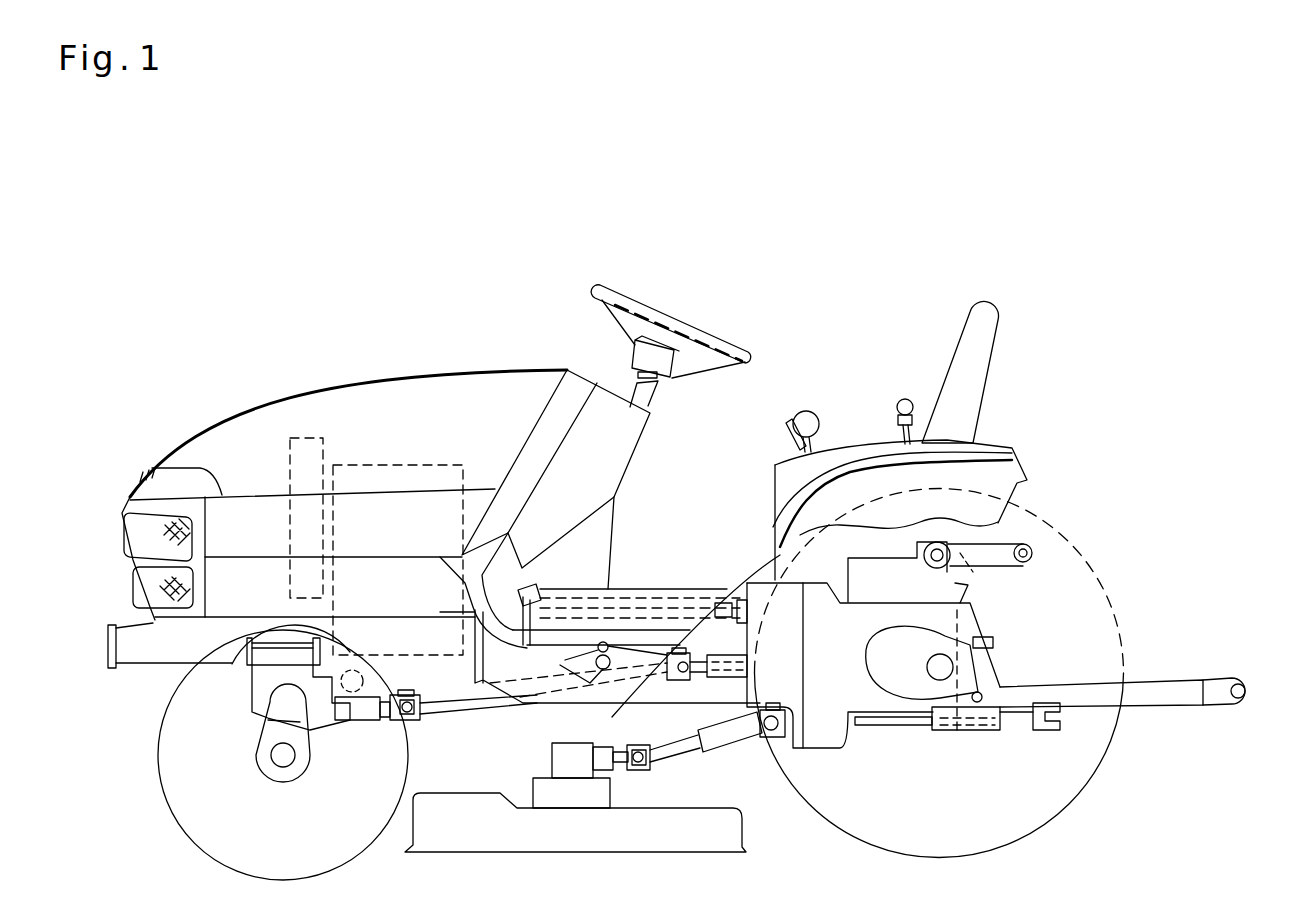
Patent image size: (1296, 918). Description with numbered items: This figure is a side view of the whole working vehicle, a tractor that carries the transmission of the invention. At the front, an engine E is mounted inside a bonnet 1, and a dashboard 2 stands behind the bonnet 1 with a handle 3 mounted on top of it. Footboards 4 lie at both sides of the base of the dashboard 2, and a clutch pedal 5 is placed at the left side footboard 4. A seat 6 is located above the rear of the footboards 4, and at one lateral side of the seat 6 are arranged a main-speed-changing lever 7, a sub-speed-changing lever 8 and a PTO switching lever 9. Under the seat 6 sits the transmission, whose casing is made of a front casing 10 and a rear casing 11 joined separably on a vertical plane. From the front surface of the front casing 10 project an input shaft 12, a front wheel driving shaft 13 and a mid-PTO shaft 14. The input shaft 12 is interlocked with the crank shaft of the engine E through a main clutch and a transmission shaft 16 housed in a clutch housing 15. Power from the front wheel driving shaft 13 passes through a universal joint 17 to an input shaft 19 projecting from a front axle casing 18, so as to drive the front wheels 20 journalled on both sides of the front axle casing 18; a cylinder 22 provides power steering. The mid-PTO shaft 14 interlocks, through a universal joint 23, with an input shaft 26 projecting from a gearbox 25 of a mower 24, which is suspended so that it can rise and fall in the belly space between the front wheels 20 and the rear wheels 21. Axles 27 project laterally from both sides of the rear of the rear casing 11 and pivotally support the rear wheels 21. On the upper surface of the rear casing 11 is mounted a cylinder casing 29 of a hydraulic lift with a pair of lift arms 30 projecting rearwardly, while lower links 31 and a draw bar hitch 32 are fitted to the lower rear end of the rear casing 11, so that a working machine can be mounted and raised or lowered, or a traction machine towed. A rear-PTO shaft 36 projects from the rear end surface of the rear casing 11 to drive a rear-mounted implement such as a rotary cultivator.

The bonnet 1 is at (243, 410).
The engine E is at (391, 463).
The dashboard 2 is at (600, 405).
The handle 3 is at (645, 300).
The footboards 4 is at (642, 628).
The clutch pedal 5 is at (543, 587).
The seat 6 is at (973, 305).
The main-speed-changing lever 7 is at (787, 424).
The sub-speed-changing lever 8 is at (810, 413).
The PTO switching lever 9 is at (905, 400).
The front casing 10 is at (762, 605).
The rear casing 11 is at (832, 712).
The input shaft 12 is at (728, 590).
The front wheel driving shaft 13 is at (723, 668).
The mid-PTO shaft 14 is at (787, 760).
The clutch housing 15 is at (512, 563).
The transmission shaft 16 is at (628, 610).
The universal joint 17 is at (445, 730).
The front axle casing 18 is at (261, 696).
The input shaft 19 is at (412, 722).
The front wheels 20 is at (178, 828).
The rear wheels 21 is at (1105, 757).
The cylinder for power steering 22 is at (352, 692).
The universal joint 23 is at (663, 765).
The mower 24 is at (436, 882).
The gearbox 25 is at (565, 768).
The input shaft 26 is at (620, 767).
The axles 27 is at (940, 680).
The cylinder casing 29 is at (960, 585).
The lift arms 30 is at (1002, 547).
The lower links 31 is at (1178, 682).
The draw bar hitch 32 is at (1040, 735).
The rear-PTO shaft 36 is at (993, 642).